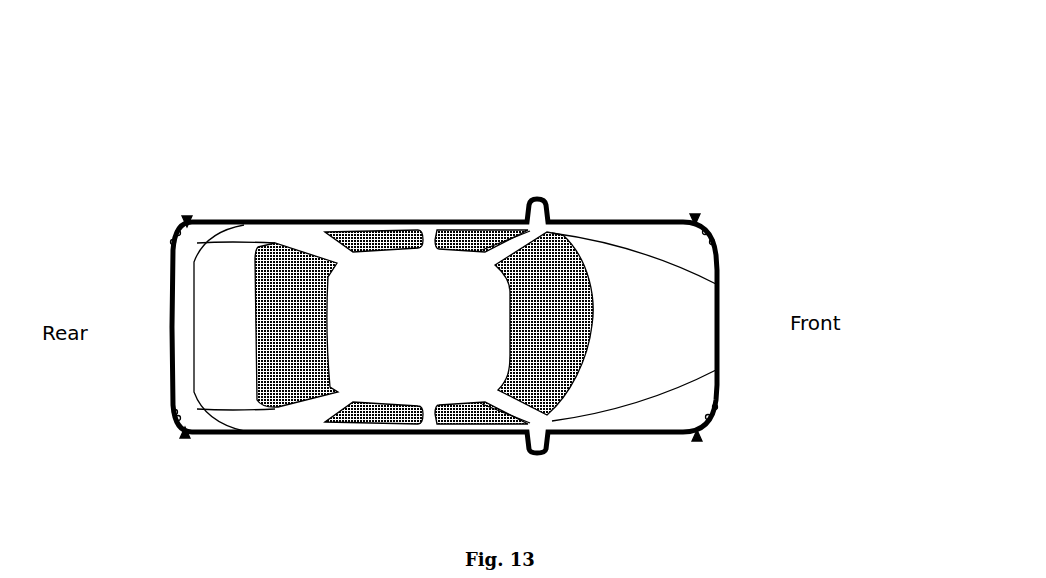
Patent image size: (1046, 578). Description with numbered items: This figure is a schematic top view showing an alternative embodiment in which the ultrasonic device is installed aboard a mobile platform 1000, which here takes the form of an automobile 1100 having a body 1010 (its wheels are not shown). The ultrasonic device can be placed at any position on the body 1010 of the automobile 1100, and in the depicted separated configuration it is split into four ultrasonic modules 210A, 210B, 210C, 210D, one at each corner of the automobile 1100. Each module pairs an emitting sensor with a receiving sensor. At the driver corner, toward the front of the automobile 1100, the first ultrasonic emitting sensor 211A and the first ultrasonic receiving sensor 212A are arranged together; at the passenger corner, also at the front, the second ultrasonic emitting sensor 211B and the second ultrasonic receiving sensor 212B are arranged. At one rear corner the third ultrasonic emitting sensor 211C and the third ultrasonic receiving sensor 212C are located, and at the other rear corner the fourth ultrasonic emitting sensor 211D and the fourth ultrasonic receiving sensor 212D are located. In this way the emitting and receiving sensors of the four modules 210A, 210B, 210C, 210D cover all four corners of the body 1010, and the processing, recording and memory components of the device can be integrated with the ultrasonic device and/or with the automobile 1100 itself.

The mobile platform 1000 is at (960, 27).
The automobile 1100 is at (338, 201).
The body 1010 is at (445, 218).
The ultrasonic module 210A is at (697, 441).
The ultrasonic module 210B is at (695, 214).
The ultrasonic module 210C is at (188, 216).
The ultrasonic module 210D is at (185, 438).
The first ultrasonic emitting sensor 211A is at (718, 407).
The second ultrasonic emitting sensor 211B is at (715, 242).
The third ultrasonic emitting sensor 211C is at (170, 242).
The fourth ultrasonic emitting sensor 211D is at (172, 412).
The first ultrasonic receiving sensor 212A is at (710, 419).
The second ultrasonic receiving sensor 212B is at (707, 231).
The third ultrasonic receiving sensor 212C is at (176, 231).
The fourth ultrasonic receiving sensor 212D is at (176, 420).